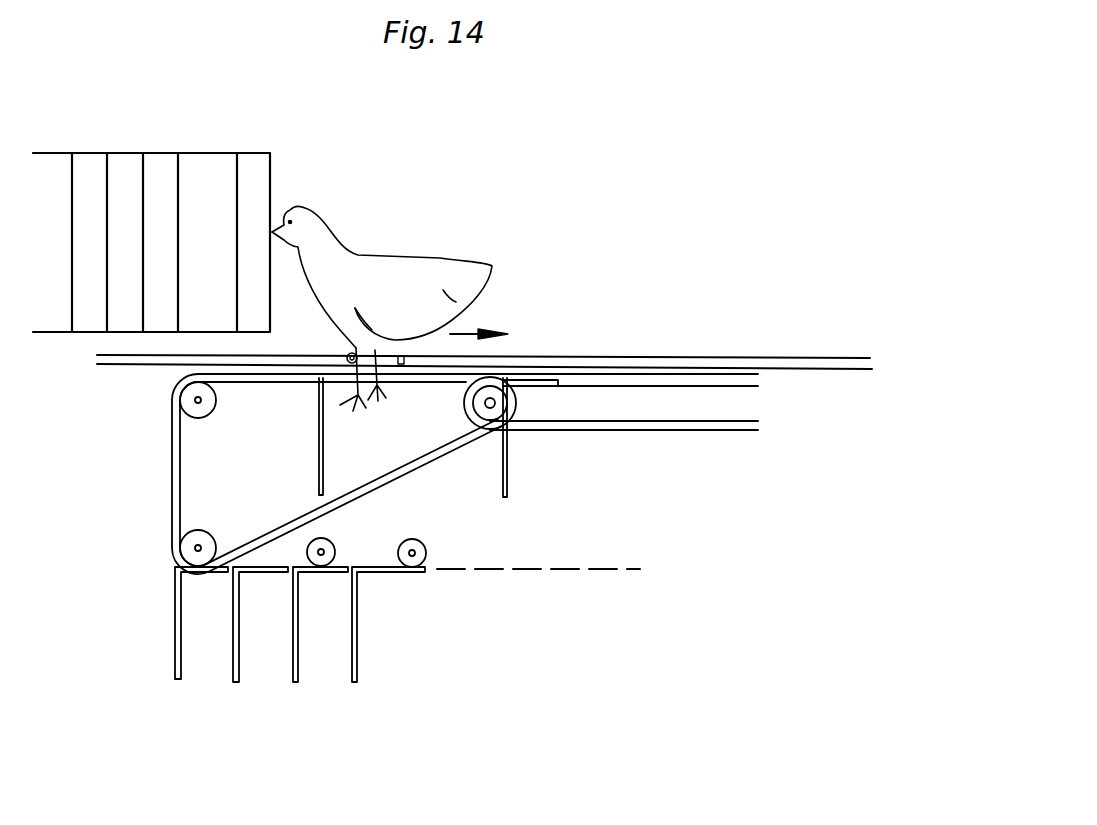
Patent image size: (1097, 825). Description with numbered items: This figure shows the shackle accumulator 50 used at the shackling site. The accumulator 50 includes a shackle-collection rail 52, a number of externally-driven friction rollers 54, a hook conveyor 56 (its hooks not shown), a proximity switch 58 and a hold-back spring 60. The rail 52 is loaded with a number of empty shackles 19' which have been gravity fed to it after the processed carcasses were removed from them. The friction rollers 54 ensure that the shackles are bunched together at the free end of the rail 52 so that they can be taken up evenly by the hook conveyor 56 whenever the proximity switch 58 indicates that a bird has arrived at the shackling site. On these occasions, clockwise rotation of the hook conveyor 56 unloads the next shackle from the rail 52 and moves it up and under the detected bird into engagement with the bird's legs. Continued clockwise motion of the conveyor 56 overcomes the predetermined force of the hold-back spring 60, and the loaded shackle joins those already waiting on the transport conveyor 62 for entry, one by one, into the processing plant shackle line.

The accumulator 50 is at (228, 100).
The shackle-collection rail 52 is at (498, 568).
The externally-driven friction rollers 54 is at (421, 546).
The hook conveyor 56 is at (173, 460).
The proximity switch 58 is at (357, 348).
The hold-back spring 60 is at (404, 356).
The transport conveyor 62 is at (638, 430).
The empty shackles 19' is at (300, 665).